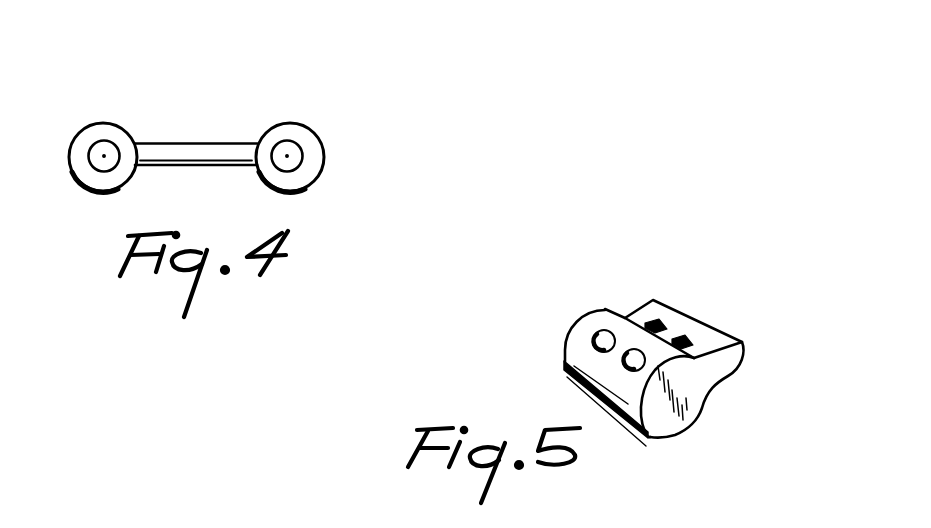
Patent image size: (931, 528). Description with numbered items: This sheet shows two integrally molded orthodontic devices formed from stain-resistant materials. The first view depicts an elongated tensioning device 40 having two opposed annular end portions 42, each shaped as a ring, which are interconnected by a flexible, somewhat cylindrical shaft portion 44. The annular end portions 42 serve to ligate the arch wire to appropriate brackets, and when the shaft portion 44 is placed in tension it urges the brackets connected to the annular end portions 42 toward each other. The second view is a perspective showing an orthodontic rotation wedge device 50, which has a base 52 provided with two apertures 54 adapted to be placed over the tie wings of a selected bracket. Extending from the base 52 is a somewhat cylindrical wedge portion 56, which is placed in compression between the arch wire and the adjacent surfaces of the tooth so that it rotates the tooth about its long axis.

In FIG. 4, the elongated tensioning device 40 is at (214, 152).
In FIG. 4, the annular end portions 42 is at (95, 181).
In FIG. 4, the shaft portion 44 is at (182, 153).
In FIG. 5, the orthodontic rotation wedge device 50 is at (693, 368).
In FIG. 5, the base 52 is at (730, 365).
In FIG. 5, the apertures 54 is at (683, 338).
In FIG. 5, the wedge portion 56 is at (660, 432).